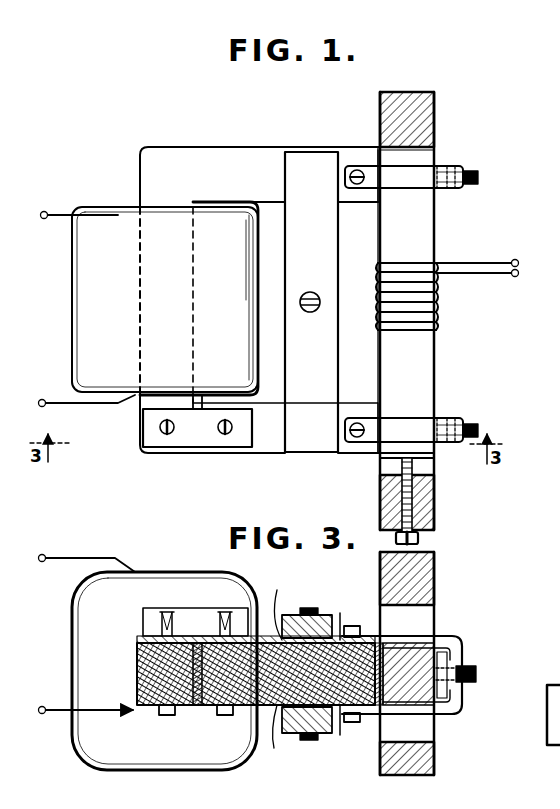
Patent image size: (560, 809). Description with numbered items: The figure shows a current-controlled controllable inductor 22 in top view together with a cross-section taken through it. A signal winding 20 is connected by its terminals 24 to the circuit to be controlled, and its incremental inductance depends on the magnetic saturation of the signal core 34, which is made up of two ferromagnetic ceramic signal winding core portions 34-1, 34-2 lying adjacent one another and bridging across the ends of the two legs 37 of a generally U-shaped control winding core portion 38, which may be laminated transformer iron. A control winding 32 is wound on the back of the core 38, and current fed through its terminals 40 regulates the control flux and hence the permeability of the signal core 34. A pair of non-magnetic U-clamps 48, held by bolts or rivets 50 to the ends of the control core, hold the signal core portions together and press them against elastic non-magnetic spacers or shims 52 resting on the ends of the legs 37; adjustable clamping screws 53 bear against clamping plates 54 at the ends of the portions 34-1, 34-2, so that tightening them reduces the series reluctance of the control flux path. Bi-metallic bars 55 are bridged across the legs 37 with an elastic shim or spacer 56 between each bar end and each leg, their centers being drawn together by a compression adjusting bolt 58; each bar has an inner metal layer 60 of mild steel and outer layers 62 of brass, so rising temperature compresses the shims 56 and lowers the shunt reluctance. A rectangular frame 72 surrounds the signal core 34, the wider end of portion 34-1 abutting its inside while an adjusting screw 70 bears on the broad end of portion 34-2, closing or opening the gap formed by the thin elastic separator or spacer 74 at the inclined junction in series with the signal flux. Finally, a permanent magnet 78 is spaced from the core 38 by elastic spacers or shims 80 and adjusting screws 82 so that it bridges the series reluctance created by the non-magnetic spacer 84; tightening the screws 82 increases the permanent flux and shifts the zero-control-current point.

In FIG. 1, the signal winding 20 is at (446, 312).
In FIG. 1, the controllable inductor 22 is at (154, 132).
In FIG. 1, the terminals 24 is at (491, 272).
In FIG. 1, the control winding 32 is at (74, 310).
In FIG. 3, the control winding 32 is at (74, 642).
In FIG. 1, the signal core 34 is at (446, 392).
In FIG. 3, the signal winding core portion 34-1 is at (438, 645).
In FIG. 3, the signal winding core portion 34-2 is at (436, 712).
In FIG. 1, the legs 37 is at (350, 150).
In FIG. 1, the control winding core portion 38 is at (232, 150).
In FIG. 3, the control winding core portion 38 is at (137, 676).
In FIG. 1, the terminals 40 is at (40, 216).
In FIG. 3, the terminals 40 is at (38, 559).
In FIG. 1, the U-clamps 48 is at (425, 166).
In FIG. 3, the U-clamps 48 is at (422, 632).
In FIG. 1, the bolts or rivets 50 is at (355, 190).
In FIG. 3, the bolts or rivets 50 is at (353, 626).
In FIG. 1, the spacers or shims 52 is at (379, 150).
In FIG. 3, the spacers or shims 52 is at (358, 722).
In FIG. 1, the clamping screws 53 is at (479, 177).
In FIG. 3, the clamping screws 53 is at (477, 672).
In FIG. 3, the clamping plates 54 is at (442, 690).
In FIG. 1, the bi-metallic bars 55 is at (342, 330).
In FIG. 3, the shim or spacer 56 is at (270, 673).
In FIG. 1, the compression adjusting bolt 58 is at (312, 292).
In FIG. 3, the compression adjusting bolt 58 is at (312, 606).
In FIG. 3, the inner metal layer 60 is at (341, 625).
In FIG. 3, the outer layers 62 is at (290, 613).
In FIG. 1, the adjusting screw 70 is at (420, 540).
In FIG. 1, the rectangular frame 72 is at (436, 500).
In FIG. 3, the rectangular frame 72 is at (436, 577).
In FIG. 3, the separator or spacer 74 is at (446, 656).
In FIG. 1, the permanent magnet 78 is at (192, 437).
In FIG. 3, the permanent magnet 78 is at (192, 618).
In FIG. 3, the spacers or shims 80 is at (212, 628).
In FIG. 1, the adjusting screws 82 is at (168, 436).
In FIG. 3, the adjusting screws 82 is at (166, 716).
In FIG. 1, the non-magnetic spacer 84 is at (200, 447).
In FIG. 3, the non-magnetic spacer 84 is at (197, 706).